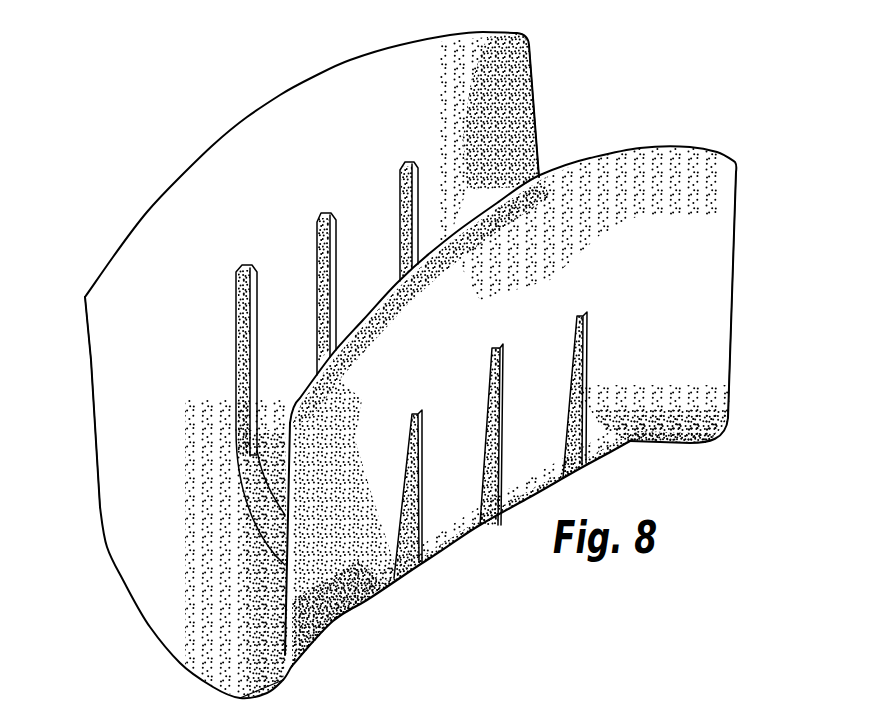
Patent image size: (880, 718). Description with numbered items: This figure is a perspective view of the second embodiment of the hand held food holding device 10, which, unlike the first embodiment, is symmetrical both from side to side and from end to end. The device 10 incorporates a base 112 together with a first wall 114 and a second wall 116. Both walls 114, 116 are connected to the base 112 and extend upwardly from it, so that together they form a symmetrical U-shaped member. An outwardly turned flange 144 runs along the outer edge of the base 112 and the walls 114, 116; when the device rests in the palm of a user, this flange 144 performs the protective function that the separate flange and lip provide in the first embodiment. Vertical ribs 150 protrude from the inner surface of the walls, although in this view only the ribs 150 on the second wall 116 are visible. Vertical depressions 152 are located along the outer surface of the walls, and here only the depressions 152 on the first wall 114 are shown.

The hand held food holding device 10 is at (585, 49).
The second wall 116 is at (460, 176).
The first wall 114 is at (522, 302).
The vertical ribs 150 is at (403, 156).
The vertical depressions 152 is at (563, 487).
The outwardly turned flange 144 is at (263, 120).
The base 112 is at (367, 603).